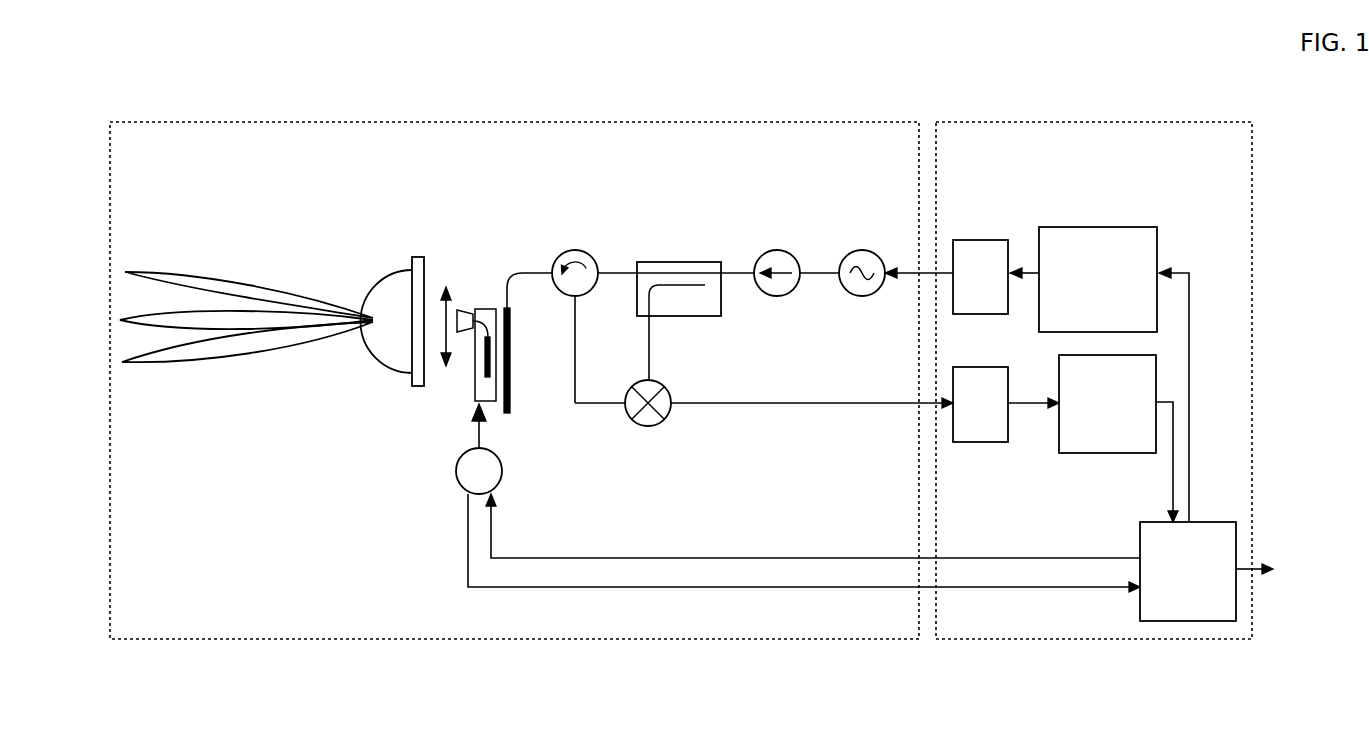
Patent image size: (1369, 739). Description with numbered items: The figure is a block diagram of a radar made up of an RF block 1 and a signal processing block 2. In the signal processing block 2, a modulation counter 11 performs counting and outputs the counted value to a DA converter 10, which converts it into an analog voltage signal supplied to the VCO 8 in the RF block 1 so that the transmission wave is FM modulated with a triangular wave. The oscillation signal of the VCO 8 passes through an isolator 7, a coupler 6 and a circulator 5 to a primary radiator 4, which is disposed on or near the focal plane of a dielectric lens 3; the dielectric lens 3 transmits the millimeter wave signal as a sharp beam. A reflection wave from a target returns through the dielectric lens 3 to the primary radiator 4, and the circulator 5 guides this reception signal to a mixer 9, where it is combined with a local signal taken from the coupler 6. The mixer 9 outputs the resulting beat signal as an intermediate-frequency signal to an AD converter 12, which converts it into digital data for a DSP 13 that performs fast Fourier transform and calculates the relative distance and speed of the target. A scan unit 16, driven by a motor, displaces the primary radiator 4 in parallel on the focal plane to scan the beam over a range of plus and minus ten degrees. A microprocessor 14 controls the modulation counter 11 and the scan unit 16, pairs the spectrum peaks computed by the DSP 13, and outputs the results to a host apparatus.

The RF block 1 is at (613, 122).
The signal processing block 2 is at (1106, 122).
The dielectric lens 3 is at (386, 268).
The primary radiator 4 is at (484, 297).
The circulator 5 is at (577, 250).
The coupler 6 is at (700, 262).
The isolator 7 is at (781, 250).
The VCO 8 is at (866, 250).
The mixer 9 is at (684, 420).
The DA converter 10 is at (998, 240).
The modulation counter 11 is at (1153, 227).
The AD converter 12 is at (975, 442).
The DSP 13 is at (1066, 453).
The microprocessor 14 is at (1234, 522).
The scan unit 16 is at (440, 473).